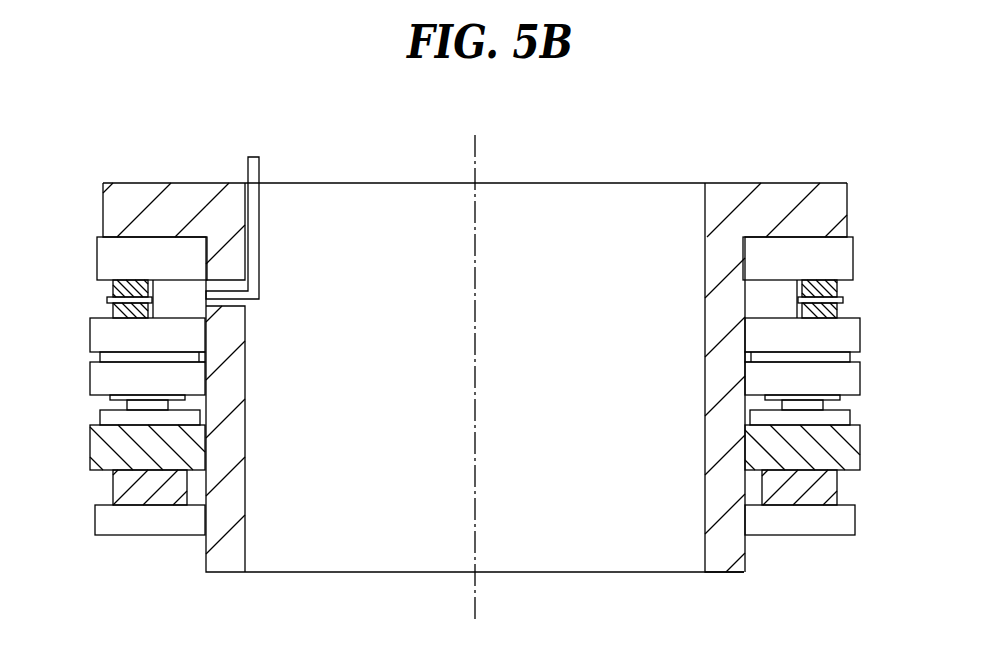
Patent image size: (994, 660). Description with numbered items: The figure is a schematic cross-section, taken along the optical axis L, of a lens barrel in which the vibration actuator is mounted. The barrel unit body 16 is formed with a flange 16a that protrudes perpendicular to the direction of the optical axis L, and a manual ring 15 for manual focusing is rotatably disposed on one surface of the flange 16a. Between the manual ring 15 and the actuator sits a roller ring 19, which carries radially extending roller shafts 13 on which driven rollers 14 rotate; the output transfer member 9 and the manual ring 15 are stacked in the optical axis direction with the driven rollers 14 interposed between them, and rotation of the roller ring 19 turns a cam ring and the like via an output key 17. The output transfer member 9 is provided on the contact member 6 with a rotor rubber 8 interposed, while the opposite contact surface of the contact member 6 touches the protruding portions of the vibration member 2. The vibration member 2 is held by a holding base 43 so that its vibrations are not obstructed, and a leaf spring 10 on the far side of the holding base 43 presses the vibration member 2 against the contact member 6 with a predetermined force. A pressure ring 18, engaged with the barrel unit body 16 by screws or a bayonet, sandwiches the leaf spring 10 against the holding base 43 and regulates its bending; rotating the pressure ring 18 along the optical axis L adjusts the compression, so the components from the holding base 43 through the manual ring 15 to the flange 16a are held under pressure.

The flange 16a is at (132, 183).
The barrel unit body 16 is at (778, 183).
The output key 17 is at (248, 168).
The output transfer member 9 is at (90, 333).
The rotor rubber 8 is at (100, 357).
The contact member 6 is at (90, 378).
The vibration member 2 is at (100, 417).
The holding base 43 is at (90, 447).
The manual ring 15 is at (853, 256).
The driven rollers 14 is at (838, 287).
The roller shafts 13 is at (843, 303).
The roller ring 19 is at (762, 312).
The leaf spring 10 is at (838, 484).
The pressure ring 18 is at (855, 522).
The optical axis L is at (477, 146).